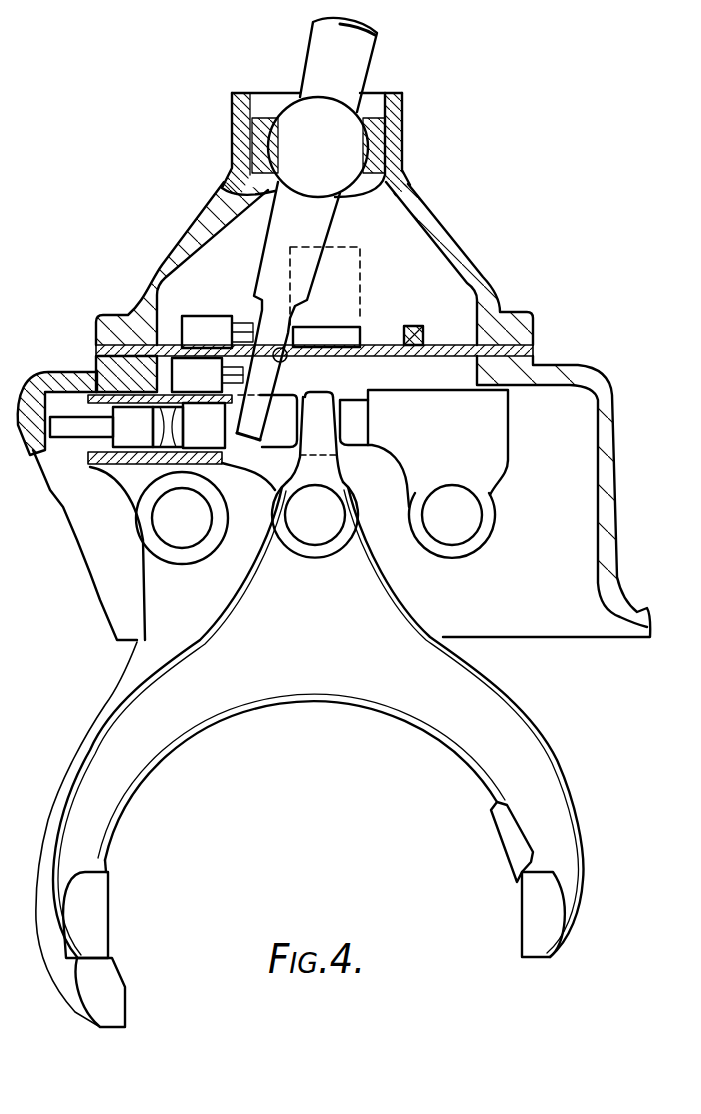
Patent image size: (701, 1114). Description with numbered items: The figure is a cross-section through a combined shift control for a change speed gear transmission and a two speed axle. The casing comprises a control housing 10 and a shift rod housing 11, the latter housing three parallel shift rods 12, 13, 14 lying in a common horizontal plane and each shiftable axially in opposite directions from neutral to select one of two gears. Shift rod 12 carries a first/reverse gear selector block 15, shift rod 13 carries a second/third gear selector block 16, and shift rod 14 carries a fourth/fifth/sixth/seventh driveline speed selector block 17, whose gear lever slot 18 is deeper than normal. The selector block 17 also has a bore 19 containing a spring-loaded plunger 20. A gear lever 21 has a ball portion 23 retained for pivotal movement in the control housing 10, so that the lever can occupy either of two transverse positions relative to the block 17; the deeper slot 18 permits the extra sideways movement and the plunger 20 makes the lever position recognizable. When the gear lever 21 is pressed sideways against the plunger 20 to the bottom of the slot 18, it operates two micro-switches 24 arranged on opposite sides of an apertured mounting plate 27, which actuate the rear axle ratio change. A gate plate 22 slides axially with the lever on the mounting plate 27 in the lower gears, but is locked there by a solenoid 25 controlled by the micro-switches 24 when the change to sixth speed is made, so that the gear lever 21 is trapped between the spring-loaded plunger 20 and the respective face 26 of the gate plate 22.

The control housing 10 is at (440, 246).
The shift rod housing 11 is at (598, 449).
The shift rod 12 is at (463, 513).
The shift rod 13 is at (330, 513).
The shift rod 14 is at (192, 517).
The first/reverse gear selector block 15 is at (490, 447).
The second/third gear selector block 16 is at (330, 405).
The fourth/fifth/sixth/seventh driveline speed selector block 17 is at (118, 463).
The gear lever slot 18 is at (282, 441).
The bore 19 is at (110, 393).
The spring-loaded plunger 20 is at (80, 426).
The gear lever 21 is at (317, 207).
The gate plate 22 is at (420, 330).
The ball portion 23 is at (342, 130).
The micro-switches 24 is at (192, 372).
The solenoid 25 is at (348, 277).
The face of the sliding gate plate 26 is at (279, 361).
The mounting plate 27 is at (518, 351).